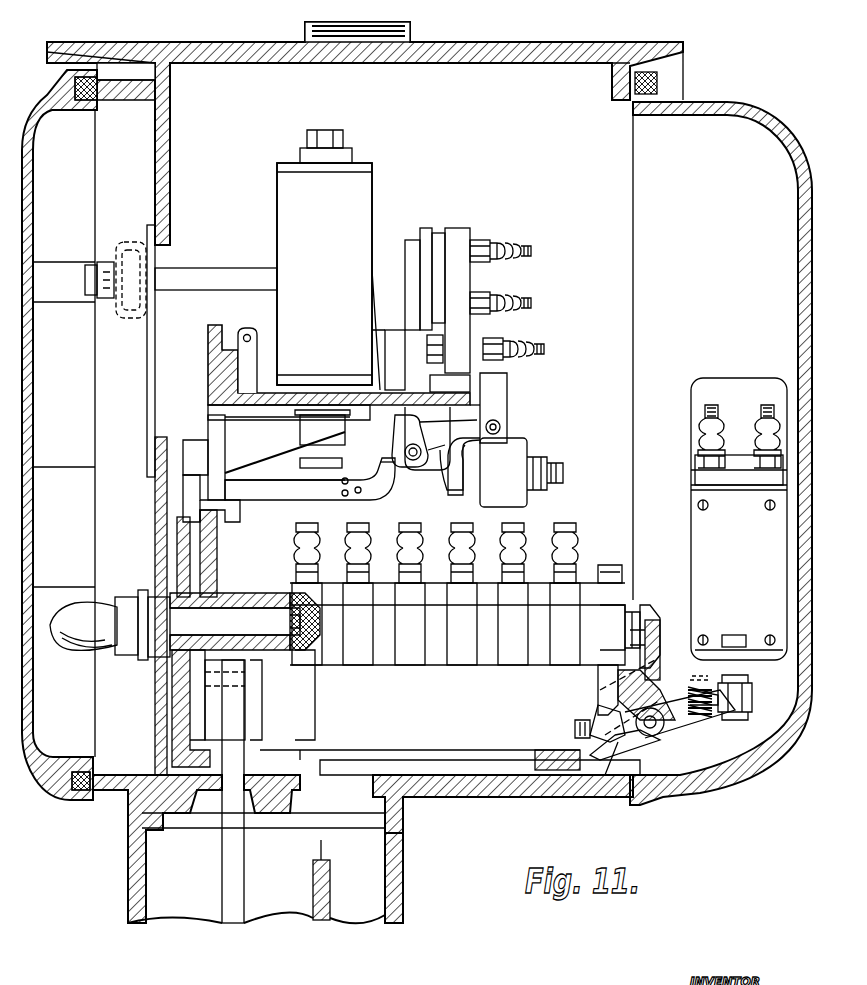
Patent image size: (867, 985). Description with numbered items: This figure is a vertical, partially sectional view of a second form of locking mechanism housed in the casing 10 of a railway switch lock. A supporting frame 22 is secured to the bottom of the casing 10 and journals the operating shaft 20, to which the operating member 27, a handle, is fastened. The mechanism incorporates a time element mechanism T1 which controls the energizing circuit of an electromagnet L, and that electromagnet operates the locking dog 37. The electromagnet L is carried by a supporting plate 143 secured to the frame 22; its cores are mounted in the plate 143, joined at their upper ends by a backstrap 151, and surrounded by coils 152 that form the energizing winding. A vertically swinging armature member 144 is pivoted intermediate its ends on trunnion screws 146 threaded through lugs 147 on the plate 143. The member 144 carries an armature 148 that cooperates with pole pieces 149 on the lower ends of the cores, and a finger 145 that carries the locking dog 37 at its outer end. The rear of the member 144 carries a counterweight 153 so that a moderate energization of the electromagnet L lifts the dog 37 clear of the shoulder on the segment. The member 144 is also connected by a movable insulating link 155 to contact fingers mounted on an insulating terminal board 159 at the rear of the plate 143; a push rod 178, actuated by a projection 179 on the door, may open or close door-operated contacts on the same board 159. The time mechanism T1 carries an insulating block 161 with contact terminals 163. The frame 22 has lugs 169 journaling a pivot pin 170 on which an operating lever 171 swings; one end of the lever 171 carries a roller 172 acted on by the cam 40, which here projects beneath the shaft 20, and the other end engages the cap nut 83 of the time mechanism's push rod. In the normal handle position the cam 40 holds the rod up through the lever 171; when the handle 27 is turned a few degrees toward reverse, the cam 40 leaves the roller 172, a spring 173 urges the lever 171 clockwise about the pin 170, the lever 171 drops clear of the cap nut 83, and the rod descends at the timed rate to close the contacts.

The casing 10 is at (534, 42).
The projection 179 is at (57, 261).
The push rod 178 is at (232, 267).
The supporting plate 143 is at (214, 330).
The electromagnet L is at (362, 183).
The coils 152 is at (362, 202).
The backstrap 151 is at (338, 150).
The insulating terminal board 159 is at (458, 230).
The movable insulating link 155 is at (500, 402).
The counterweight 153 is at (516, 440).
The lugs 147 is at (395, 430).
The trunnion screws 146 is at (410, 465).
The armature member 144 is at (445, 455).
The pole pieces 149 is at (300, 428).
The armature 148 is at (300, 465).
The locking dog 37 is at (238, 507).
The finger 145 is at (305, 498).
The operating member 27 is at (133, 599).
The supporting frame 22 is at (516, 752).
The operating shaft 20 is at (666, 630).
The time element mechanism T1 is at (760, 352).
The insulating block 161 is at (740, 478).
The contact terminals 163 is at (770, 406).
The cam 40 is at (605, 688).
The roller 172 is at (600, 711).
The lugs 169 is at (641, 747).
The pivot pin 170 is at (668, 728).
The operating lever 171 is at (738, 712).
The spring 173 is at (722, 725).
The cap nut 83 is at (745, 695).